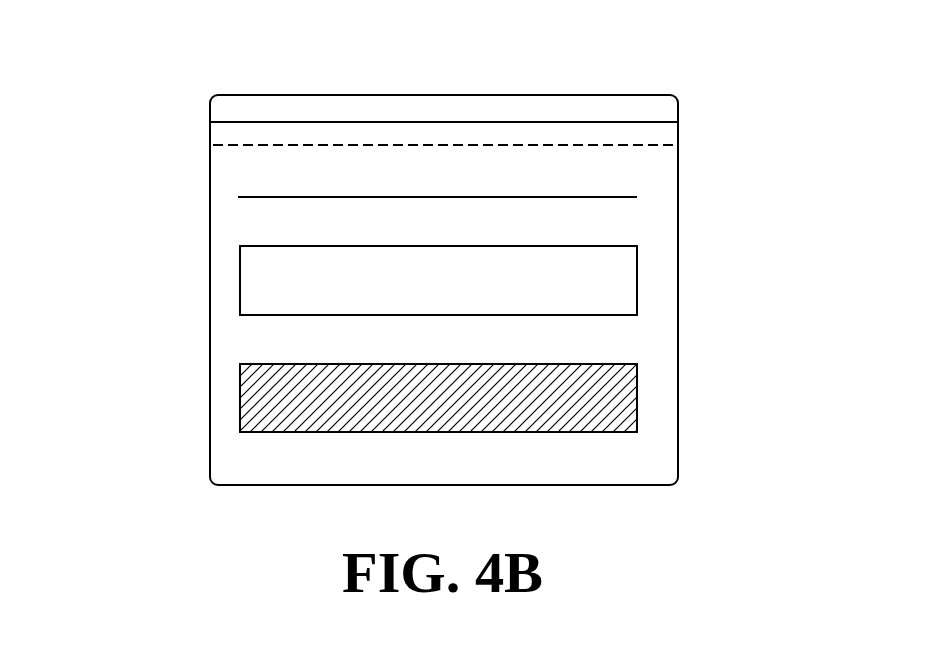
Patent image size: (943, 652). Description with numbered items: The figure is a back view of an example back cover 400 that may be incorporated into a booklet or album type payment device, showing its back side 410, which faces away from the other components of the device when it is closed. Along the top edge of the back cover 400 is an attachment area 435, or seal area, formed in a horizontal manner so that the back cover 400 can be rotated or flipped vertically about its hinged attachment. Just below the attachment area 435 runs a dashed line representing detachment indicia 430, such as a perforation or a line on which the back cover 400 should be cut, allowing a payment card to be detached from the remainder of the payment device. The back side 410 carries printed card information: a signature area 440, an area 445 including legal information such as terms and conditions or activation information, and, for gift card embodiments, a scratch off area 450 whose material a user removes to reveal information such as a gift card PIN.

The back cover 400 is at (146, 500).
The back side 410 is at (664, 261).
The detachment indicia 430 is at (685, 146).
The attachment area 435 is at (574, 108).
The signature area 440 is at (236, 196).
The area including legal information 445 is at (238, 280).
The scratch off area 450 is at (237, 400).